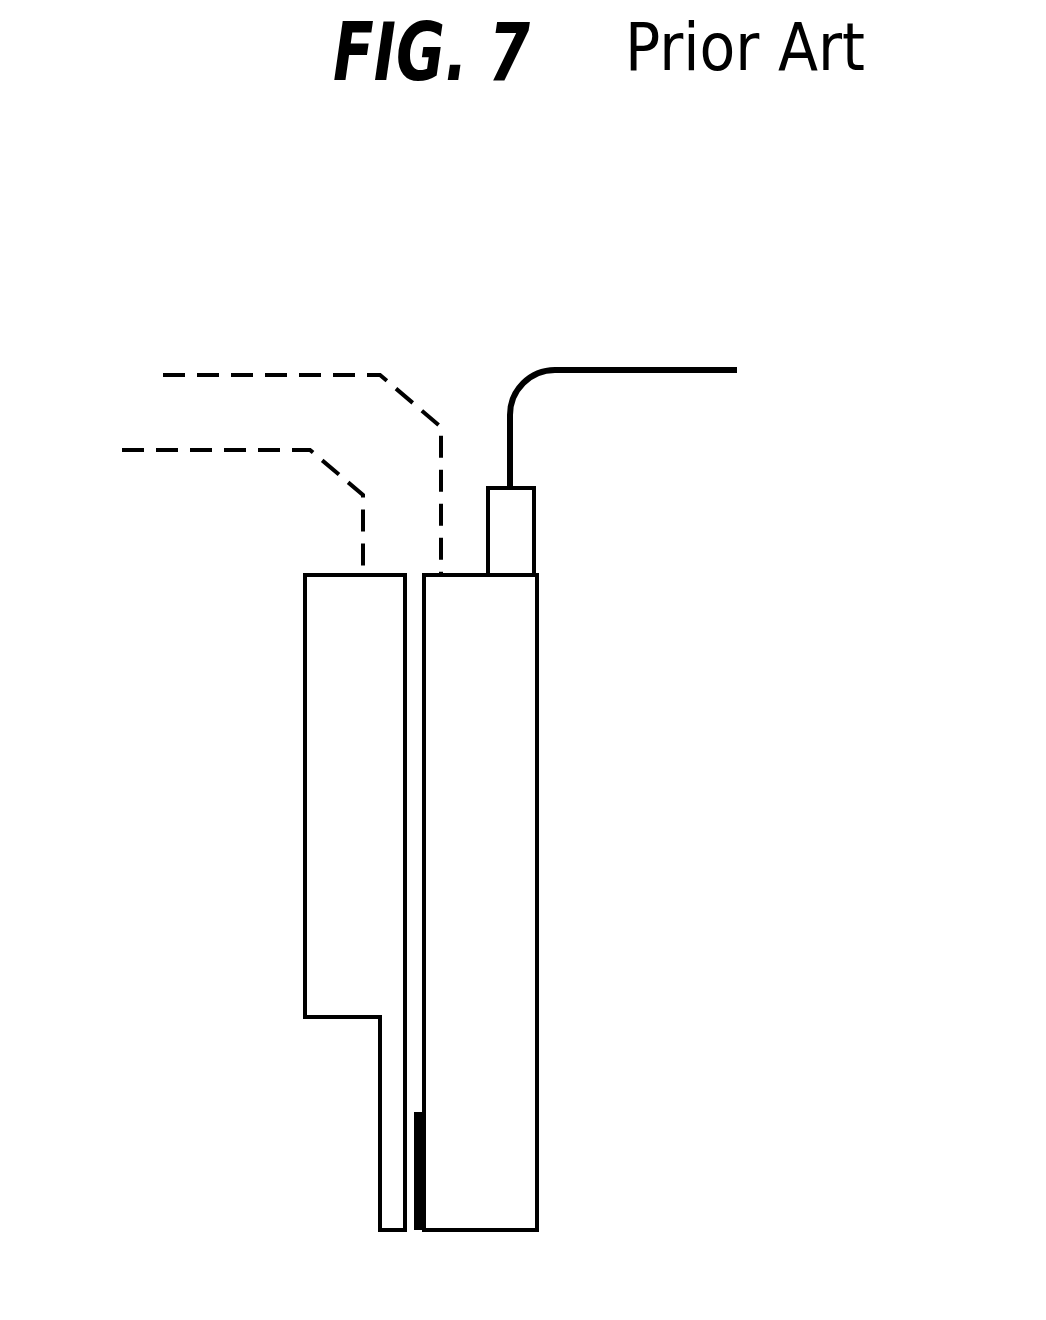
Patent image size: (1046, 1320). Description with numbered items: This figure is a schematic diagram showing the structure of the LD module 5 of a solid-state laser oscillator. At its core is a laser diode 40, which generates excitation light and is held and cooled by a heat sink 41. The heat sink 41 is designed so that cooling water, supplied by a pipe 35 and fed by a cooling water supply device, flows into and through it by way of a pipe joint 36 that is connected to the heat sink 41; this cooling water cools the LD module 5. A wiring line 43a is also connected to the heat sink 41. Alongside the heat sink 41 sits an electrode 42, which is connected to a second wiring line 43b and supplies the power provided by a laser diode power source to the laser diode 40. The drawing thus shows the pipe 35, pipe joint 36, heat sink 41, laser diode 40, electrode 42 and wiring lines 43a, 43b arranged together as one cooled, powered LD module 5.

The LD module 5 is at (429, 859).
The pipe 35 is at (654, 368).
The pipe joint 36 is at (535, 535).
The laser diode 40 is at (415, 1160).
The heat sink 41 is at (537, 752).
The electrode 42 is at (305, 800).
The wiring line 43a is at (287, 373).
The wiring line 43b is at (135, 447).